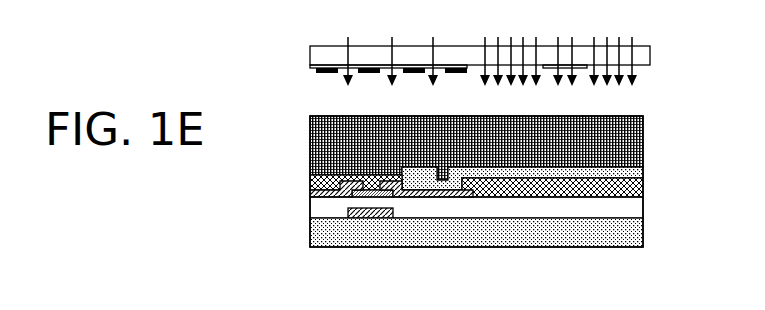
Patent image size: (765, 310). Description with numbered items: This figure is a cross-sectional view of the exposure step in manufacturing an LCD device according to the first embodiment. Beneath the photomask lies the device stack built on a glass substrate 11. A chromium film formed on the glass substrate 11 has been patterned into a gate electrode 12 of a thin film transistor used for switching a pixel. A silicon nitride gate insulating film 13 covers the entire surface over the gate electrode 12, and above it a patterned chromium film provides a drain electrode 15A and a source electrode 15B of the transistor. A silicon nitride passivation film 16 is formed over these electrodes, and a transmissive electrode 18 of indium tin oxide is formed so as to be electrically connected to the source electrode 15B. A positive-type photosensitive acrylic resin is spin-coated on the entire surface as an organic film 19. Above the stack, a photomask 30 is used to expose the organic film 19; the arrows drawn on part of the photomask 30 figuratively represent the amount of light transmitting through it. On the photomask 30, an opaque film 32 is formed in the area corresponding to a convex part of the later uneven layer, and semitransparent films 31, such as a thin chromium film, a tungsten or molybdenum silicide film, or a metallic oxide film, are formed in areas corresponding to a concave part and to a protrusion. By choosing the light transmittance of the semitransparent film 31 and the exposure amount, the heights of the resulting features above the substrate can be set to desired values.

The photomask 30 is at (655, 44).
The semitransparent film 31 is at (316, 66).
The opaque film 32 is at (317, 73).
The organic film 19 is at (636, 132).
The transmissive electrode 18 is at (638, 160).
The passivation film 16 is at (638, 182).
The drain electrode 15A is at (325, 197).
The source electrode 15B is at (454, 197).
The gate insulating film 13 is at (638, 208).
The gate electrode 12 is at (375, 218).
The glass substrate 11 is at (638, 238).